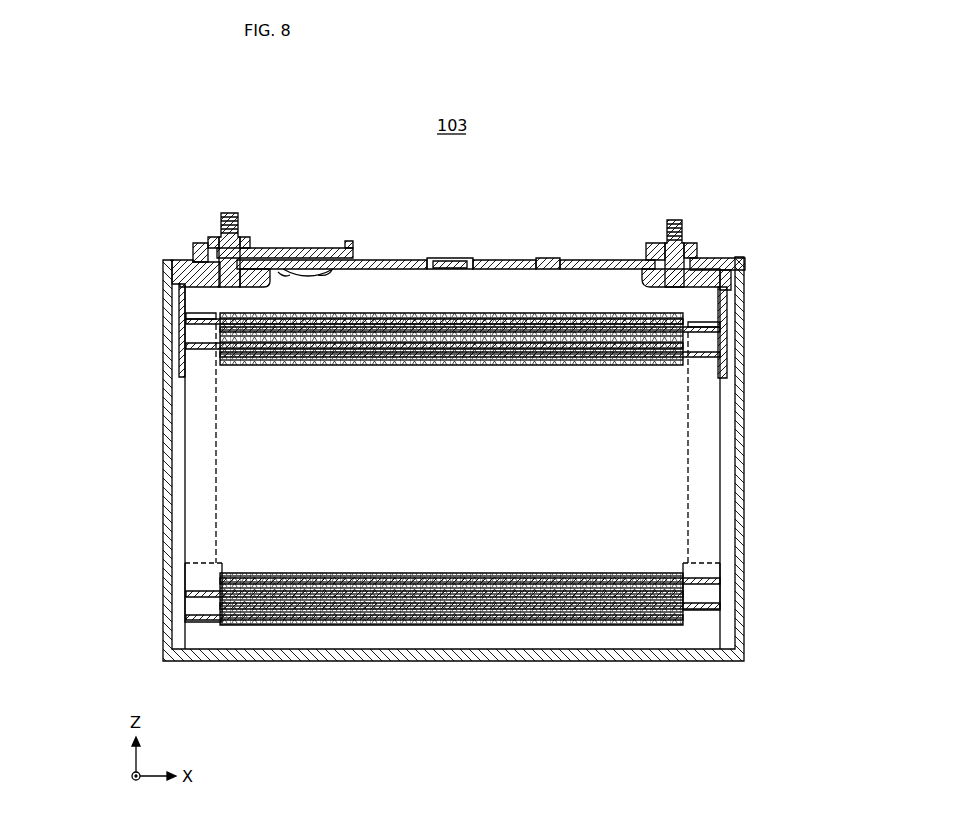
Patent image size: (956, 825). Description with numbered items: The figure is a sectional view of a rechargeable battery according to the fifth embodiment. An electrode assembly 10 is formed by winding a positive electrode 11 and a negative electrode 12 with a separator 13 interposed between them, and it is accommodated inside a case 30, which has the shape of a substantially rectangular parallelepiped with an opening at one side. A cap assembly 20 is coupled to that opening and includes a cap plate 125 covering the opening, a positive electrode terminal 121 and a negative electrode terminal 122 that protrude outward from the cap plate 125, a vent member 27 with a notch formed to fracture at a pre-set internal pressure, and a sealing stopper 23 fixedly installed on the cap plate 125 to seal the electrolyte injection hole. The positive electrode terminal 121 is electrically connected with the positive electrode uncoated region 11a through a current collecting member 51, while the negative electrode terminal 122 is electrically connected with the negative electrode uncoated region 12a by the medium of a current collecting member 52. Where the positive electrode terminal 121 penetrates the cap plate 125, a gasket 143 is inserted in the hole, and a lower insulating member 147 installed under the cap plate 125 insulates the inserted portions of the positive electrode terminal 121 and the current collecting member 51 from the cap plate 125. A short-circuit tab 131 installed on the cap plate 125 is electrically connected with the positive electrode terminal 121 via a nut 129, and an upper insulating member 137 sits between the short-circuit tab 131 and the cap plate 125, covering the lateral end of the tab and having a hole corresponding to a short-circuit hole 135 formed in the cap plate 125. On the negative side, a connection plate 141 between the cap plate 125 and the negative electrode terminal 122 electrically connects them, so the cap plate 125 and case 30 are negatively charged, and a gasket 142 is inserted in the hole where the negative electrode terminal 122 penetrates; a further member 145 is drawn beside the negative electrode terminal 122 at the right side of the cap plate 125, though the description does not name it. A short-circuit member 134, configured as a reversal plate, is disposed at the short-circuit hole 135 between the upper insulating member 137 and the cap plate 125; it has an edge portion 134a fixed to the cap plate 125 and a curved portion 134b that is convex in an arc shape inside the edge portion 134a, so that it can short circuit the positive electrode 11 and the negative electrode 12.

The electrode assembly 10 is at (452, 513).
The positive electrode 11 is at (300, 598).
The positive electrode uncoated region 11a is at (207, 623).
The negative electrode 12 is at (356, 610).
The negative electrode uncoated region 12a is at (705, 611).
The separator 13 is at (450, 605).
The cap assembly 20 is at (446, 230).
The sealing stopper 23 is at (548, 257).
The vent member 27 is at (441, 257).
The case 30 is at (603, 662).
The current collecting member 51 is at (180, 305).
The current collecting member 52 is at (726, 305).
The positive electrode terminal 121 is at (232, 212).
The negative electrode terminal 122 is at (674, 220).
The cap plate 125 is at (392, 259).
The nut 129 is at (212, 240).
The short-circuit tab 131 is at (264, 247).
The short-circuit member 134 is at (305, 268).
The edge portion 134a is at (279, 274).
The curved portion 134b is at (322, 276).
The short-circuit hole 135 is at (316, 262).
The upper insulating member 137 is at (349, 241).
The connection plate 141 is at (648, 248).
The gasket 142 is at (712, 263).
The gasket 143 is at (190, 261).
The second lower insulating member 145 is at (726, 279).
The lower insulating member 147 is at (180, 282).